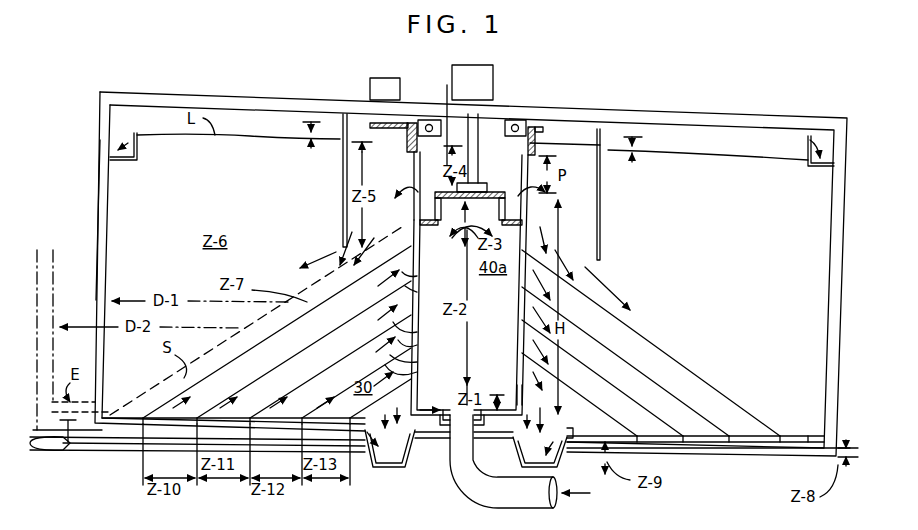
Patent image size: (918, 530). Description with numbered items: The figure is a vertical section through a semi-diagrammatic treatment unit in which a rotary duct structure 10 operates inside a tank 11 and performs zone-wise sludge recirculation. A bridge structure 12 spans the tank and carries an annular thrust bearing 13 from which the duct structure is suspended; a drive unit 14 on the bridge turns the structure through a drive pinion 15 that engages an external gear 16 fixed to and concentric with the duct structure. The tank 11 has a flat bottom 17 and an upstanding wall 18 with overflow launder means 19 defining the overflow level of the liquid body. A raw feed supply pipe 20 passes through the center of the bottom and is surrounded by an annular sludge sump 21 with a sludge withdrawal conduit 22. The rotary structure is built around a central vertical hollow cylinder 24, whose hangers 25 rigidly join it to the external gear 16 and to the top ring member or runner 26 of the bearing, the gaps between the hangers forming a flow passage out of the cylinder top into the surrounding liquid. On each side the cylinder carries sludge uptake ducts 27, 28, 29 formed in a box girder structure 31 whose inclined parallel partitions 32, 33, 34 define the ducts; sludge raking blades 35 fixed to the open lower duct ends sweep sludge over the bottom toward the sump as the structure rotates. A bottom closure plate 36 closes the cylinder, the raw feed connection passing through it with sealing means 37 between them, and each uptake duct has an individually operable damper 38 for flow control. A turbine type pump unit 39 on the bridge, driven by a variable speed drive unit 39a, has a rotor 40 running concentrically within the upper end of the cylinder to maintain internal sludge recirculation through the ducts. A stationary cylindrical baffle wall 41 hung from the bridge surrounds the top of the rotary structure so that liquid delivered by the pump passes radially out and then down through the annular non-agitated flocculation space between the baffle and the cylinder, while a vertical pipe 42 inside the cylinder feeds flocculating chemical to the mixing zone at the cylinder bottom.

The rotary duct structure 10 is at (529, 230).
The tank 11 is at (90, 137).
The bridge structure 12 is at (643, 108).
The annular thrust bearing 13 is at (517, 126).
The drive unit 14 is at (370, 90).
The drive pinion 15 is at (390, 130).
The external gear 16 is at (410, 140).
The flat bottom 17 is at (688, 450).
The upstanding wall 18 is at (104, 258).
The overflow launder means 19 is at (225, 147).
The raw feed supply pipe 20 is at (472, 487).
The annular sludge sump 21 is at (389, 466).
The sludge withdrawal conduit 22 is at (118, 452).
The central vertical hollow member or cylinder 24 is at (516, 320).
The hangers 25 is at (413, 172).
The top ring member or runner 26 is at (418, 124).
The sludge uptake duct 27 is at (277, 332).
The sludge uptake duct 28 is at (371, 373).
The sludge uptake duct 29 is at (419, 357).
The box girder structure 31 is at (263, 338).
The inclined parallel partition 32 is at (236, 382).
The inclined parallel partition 33 is at (266, 400).
The inclined parallel partition 34 is at (306, 406).
The sludge raking blades 35 is at (125, 415).
The bottom closure plate 36 is at (515, 395).
The sealing means 37 is at (443, 428).
The dampers 38 is at (418, 333).
The turbine type pump unit 39 is at (500, 98).
The variable speed drive unit 39a is at (472, 82).
The rotor 40 is at (484, 183).
The stationary cylindrical baffle wall 41 is at (342, 185).
The vertical pipe 42 is at (422, 282).